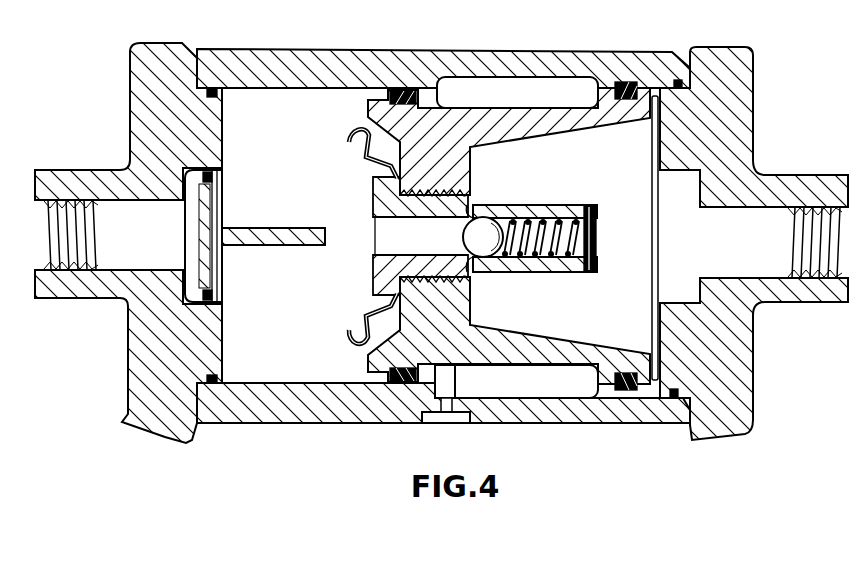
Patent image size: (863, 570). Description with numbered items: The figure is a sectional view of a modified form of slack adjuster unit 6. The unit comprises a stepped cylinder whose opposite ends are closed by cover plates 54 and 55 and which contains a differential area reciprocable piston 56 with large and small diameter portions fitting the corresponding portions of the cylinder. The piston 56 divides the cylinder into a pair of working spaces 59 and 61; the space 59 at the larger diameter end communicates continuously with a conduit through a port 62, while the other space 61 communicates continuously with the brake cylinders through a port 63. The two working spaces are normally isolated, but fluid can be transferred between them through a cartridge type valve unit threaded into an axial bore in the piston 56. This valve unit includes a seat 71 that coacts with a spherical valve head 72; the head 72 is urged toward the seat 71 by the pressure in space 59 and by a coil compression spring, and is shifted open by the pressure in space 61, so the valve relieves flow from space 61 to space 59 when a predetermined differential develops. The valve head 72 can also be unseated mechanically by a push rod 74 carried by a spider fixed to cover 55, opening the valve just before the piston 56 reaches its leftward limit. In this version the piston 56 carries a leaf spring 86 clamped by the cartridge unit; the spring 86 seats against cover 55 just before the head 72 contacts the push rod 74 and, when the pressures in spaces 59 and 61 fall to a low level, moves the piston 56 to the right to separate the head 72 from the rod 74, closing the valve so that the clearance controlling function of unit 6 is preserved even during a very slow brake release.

The slack adjuster unit 6 is at (411, 44).
The cover plate 54 is at (754, 97).
The cover plate 55 is at (131, 139).
The differential area reciprocable piston 56 is at (507, 100).
The working space 59 is at (690, 237).
The working space 61 is at (275, 298).
The port 62 is at (850, 206).
The port 63 is at (44, 199).
The seat 71 is at (492, 214).
The spherical valve head 72 is at (464, 244).
The push rod 74 is at (258, 226).
The leaf spring 86 is at (350, 140).